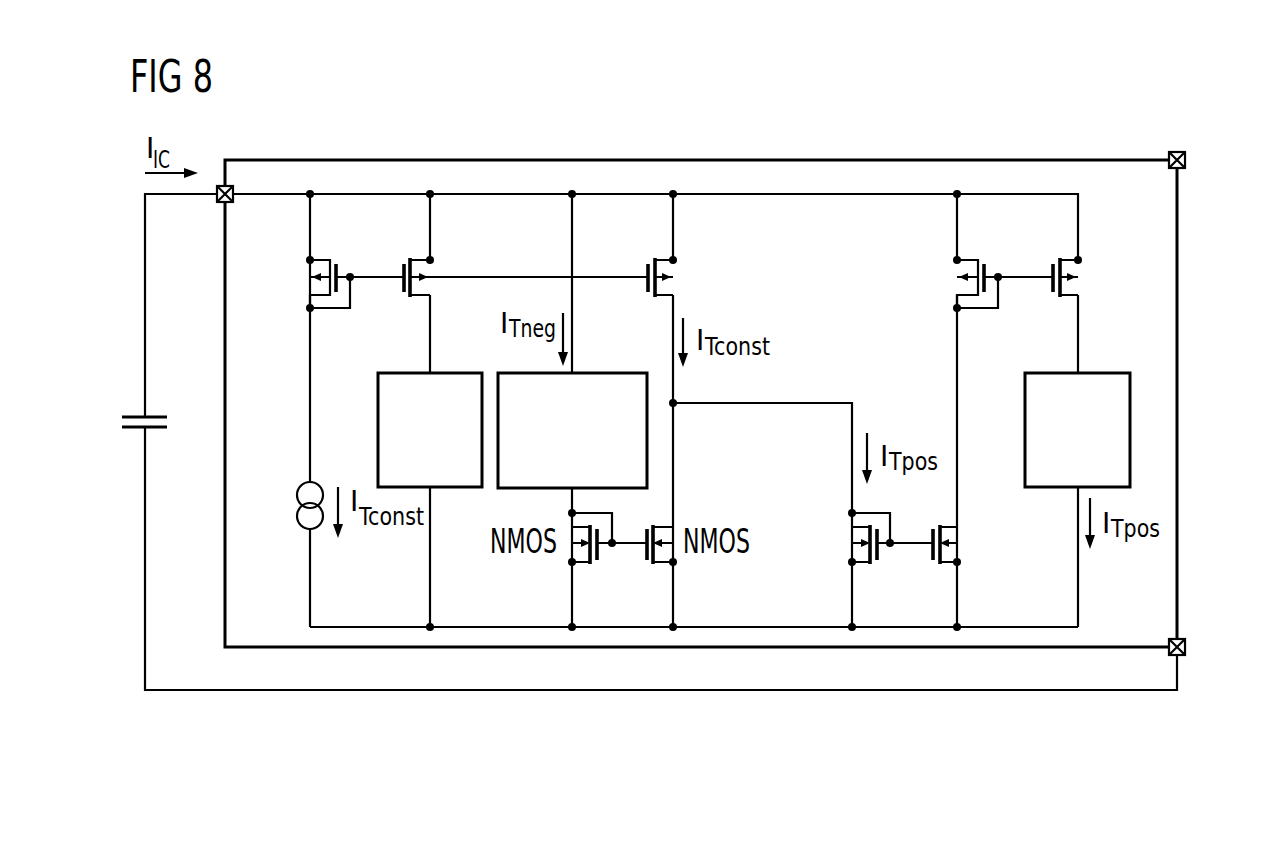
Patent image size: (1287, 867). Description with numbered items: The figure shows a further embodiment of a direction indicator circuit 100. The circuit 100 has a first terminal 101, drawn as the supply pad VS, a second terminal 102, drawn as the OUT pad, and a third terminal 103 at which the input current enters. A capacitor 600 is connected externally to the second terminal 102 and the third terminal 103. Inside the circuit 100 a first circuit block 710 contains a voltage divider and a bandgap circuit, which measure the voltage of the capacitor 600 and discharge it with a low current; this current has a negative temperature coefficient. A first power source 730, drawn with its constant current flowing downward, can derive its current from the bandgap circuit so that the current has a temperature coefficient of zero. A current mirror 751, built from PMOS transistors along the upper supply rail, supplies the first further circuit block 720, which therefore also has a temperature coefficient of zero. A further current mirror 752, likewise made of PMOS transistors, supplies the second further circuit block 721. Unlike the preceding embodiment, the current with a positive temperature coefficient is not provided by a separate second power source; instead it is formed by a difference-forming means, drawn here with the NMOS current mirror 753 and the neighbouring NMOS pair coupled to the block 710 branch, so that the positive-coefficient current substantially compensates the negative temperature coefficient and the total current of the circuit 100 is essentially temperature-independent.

The direction indicator circuit 100 is at (815, 159).
The first terminal 101 is at (1175, 150).
The second terminal 102 is at (1182, 658).
The third terminal 103 is at (218, 206).
The capacitor 600 is at (152, 430).
The first circuit block 710 is at (591, 372).
The first further circuit block 720 is at (410, 372).
The second further circuit block 721 is at (1095, 372).
The first power source 730 is at (304, 533).
The current mirror 751 is at (400, 267).
The further current mirror 752 is at (1048, 266).
The current mirror 753 is at (880, 566).